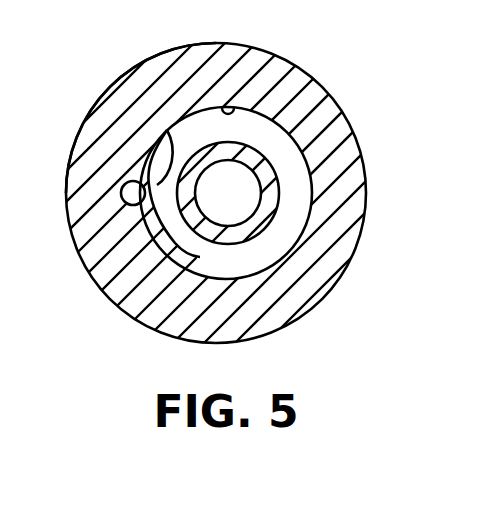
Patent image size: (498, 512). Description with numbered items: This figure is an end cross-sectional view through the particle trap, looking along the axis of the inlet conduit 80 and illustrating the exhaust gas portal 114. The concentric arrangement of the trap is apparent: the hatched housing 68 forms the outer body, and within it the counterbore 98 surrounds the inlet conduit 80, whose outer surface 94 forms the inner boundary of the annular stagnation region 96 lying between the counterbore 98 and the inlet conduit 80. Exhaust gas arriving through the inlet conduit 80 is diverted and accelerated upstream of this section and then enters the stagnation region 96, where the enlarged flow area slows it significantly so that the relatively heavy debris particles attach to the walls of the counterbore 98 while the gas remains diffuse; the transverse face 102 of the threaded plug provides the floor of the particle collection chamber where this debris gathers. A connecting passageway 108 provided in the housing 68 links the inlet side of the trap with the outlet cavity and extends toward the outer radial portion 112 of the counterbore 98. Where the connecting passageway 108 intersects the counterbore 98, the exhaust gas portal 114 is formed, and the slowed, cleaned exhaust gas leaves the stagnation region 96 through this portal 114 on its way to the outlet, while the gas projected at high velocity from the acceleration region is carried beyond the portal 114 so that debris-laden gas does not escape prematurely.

The housing 68 is at (119, 310).
The inlet conduit 80 is at (242, 156).
The outer surface of inlet conduit 94 is at (288, 203).
The stagnation region 96 is at (282, 236).
The counterbore 98 is at (222, 107).
The transverse face of threaded plug 102 is at (286, 156).
The connecting passageway 108 is at (136, 172).
The outer radial portion of counterbore 112 is at (162, 138).
The exhaust gas portal 114 is at (228, 216).